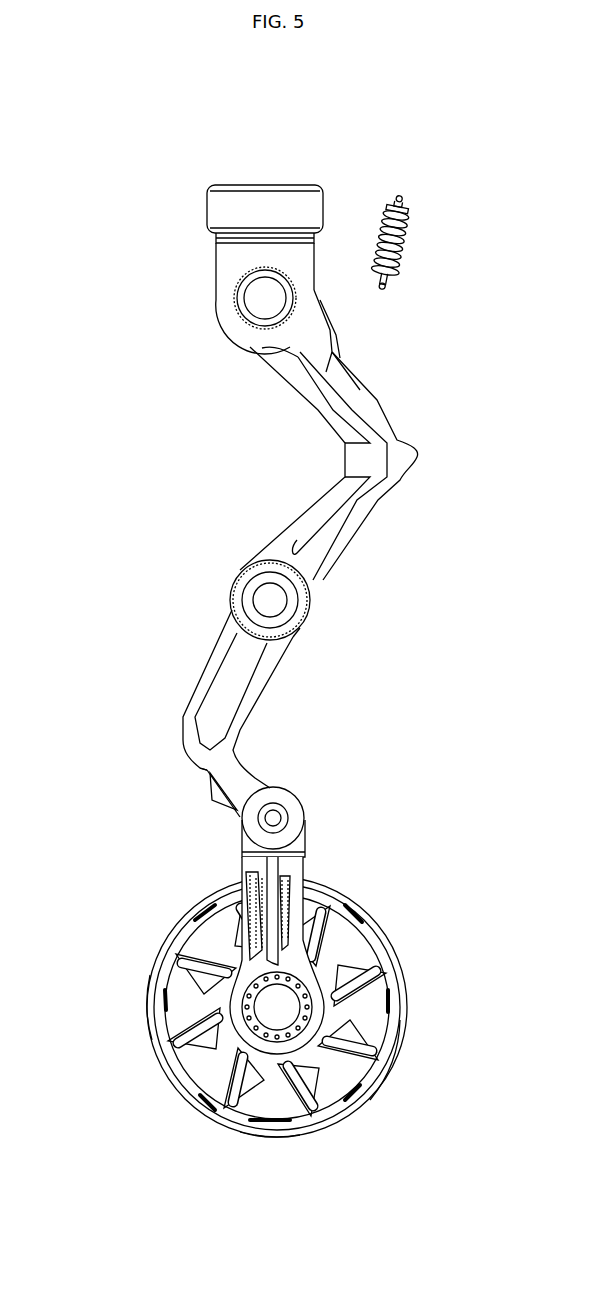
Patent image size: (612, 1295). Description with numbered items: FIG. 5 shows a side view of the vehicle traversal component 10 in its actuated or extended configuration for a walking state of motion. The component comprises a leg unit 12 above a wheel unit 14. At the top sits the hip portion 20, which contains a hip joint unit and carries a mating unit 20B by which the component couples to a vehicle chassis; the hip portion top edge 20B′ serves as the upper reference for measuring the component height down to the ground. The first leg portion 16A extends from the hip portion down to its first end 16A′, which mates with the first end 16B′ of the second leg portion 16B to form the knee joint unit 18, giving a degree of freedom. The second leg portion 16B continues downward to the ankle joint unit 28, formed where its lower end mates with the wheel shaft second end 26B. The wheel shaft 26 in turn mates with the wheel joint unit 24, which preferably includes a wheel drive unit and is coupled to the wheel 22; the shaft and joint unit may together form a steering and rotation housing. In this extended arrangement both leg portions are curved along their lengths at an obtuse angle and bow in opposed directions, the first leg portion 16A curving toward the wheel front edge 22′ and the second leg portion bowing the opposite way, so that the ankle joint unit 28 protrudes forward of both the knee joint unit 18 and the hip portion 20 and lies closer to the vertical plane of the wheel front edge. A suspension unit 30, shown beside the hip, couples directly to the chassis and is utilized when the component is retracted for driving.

The vehicle traversal component 10 is at (140, 586).
The leg unit 12 is at (492, 542).
The wheel unit 14 is at (105, 1054).
The first leg portion 16A is at (373, 420).
The first end of first leg portion 16A′ is at (310, 583).
The second leg portion 16B is at (247, 707).
The first end of second leg portion 16B′ is at (293, 637).
The knee joint unit 18 is at (300, 612).
The hip portion 20 is at (228, 300).
The mating unit 20B is at (303, 182).
The hip portion top edge 20B′ is at (237, 183).
The wheel 22 is at (337, 1080).
The wheel front edge 22′ is at (390, 1060).
The wheel joint unit 24 is at (290, 1005).
The wheel shaft 26 is at (270, 915).
The wheel shaft second end 26B is at (293, 853).
The ankle joint unit 28 is at (293, 807).
The suspension unit 30 is at (410, 238).